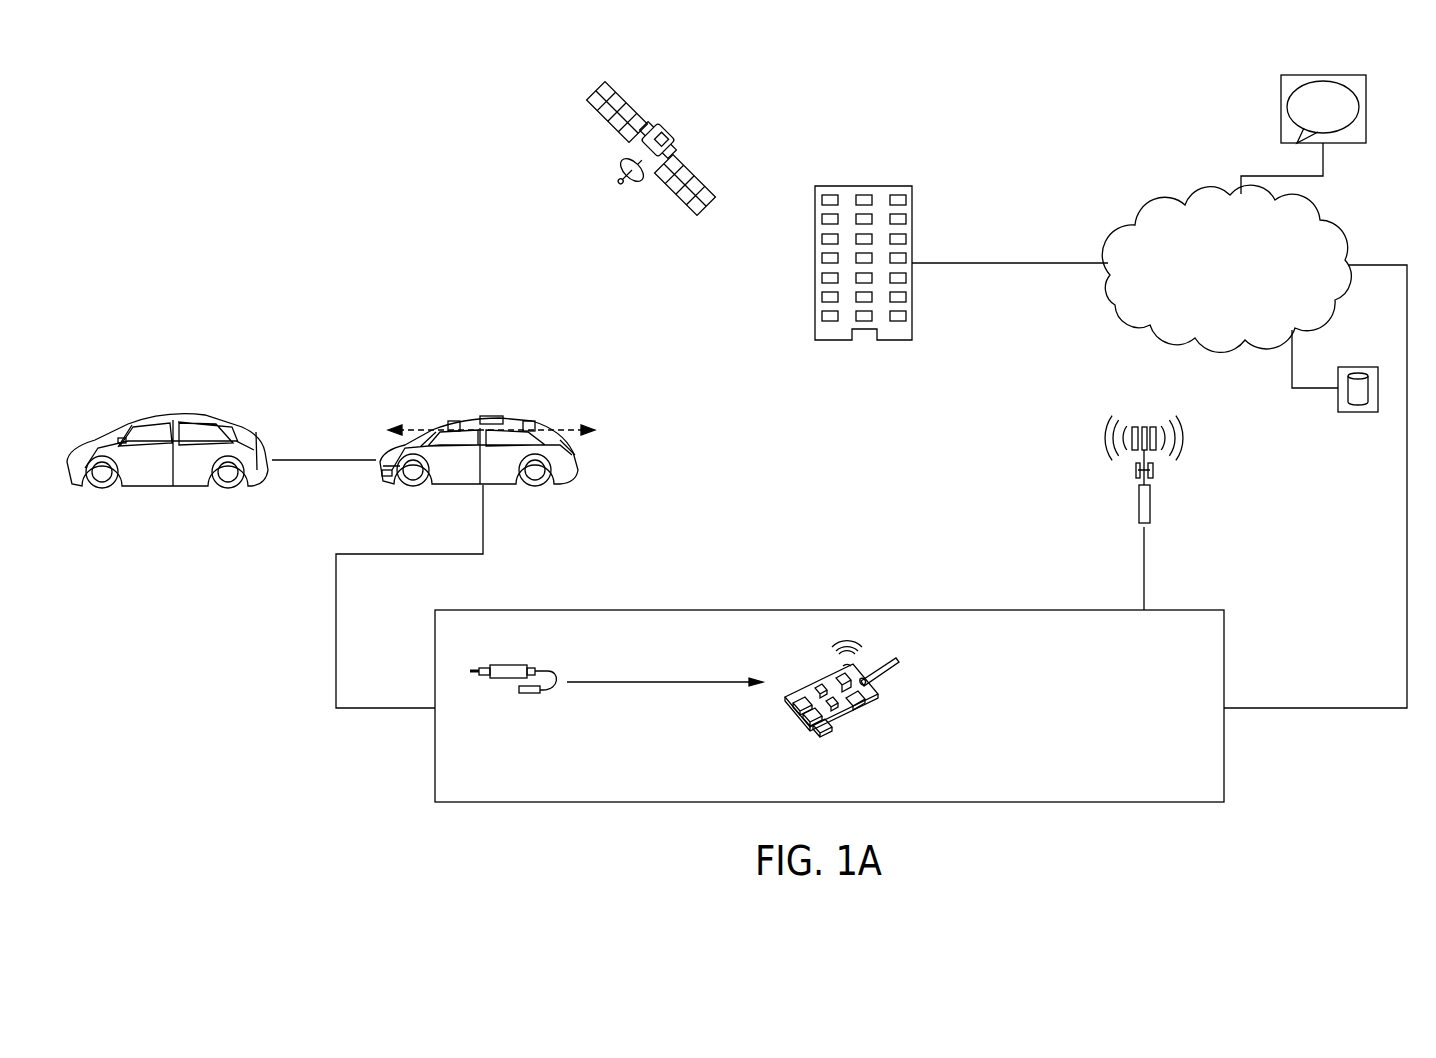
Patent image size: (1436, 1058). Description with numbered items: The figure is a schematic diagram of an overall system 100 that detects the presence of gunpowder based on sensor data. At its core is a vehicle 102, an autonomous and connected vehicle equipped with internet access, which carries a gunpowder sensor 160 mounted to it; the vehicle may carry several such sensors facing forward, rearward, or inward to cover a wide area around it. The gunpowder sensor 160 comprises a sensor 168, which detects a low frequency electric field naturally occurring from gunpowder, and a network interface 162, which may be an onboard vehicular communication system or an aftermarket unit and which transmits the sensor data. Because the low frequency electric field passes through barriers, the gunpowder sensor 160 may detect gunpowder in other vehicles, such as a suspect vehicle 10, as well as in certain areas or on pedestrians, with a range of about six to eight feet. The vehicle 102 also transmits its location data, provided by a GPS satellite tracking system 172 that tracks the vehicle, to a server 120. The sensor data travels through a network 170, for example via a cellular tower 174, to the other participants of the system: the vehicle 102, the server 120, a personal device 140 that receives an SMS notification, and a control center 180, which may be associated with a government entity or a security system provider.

The system 100 is at (275, 188).
The vehicle 10 is at (197, 415).
The vehicle 102 is at (580, 458).
The gunpowder sensor 160 is at (426, 429).
The sensor 168 is at (509, 665).
The network interface 162 is at (848, 720).
The GPS satellite tracking system 172 is at (632, 100).
The cellular tower 174 is at (1150, 503).
The control center 180 is at (913, 212).
The network 170 is at (1345, 225).
The personal device 140 is at (1367, 108).
The server 120 is at (1358, 412).